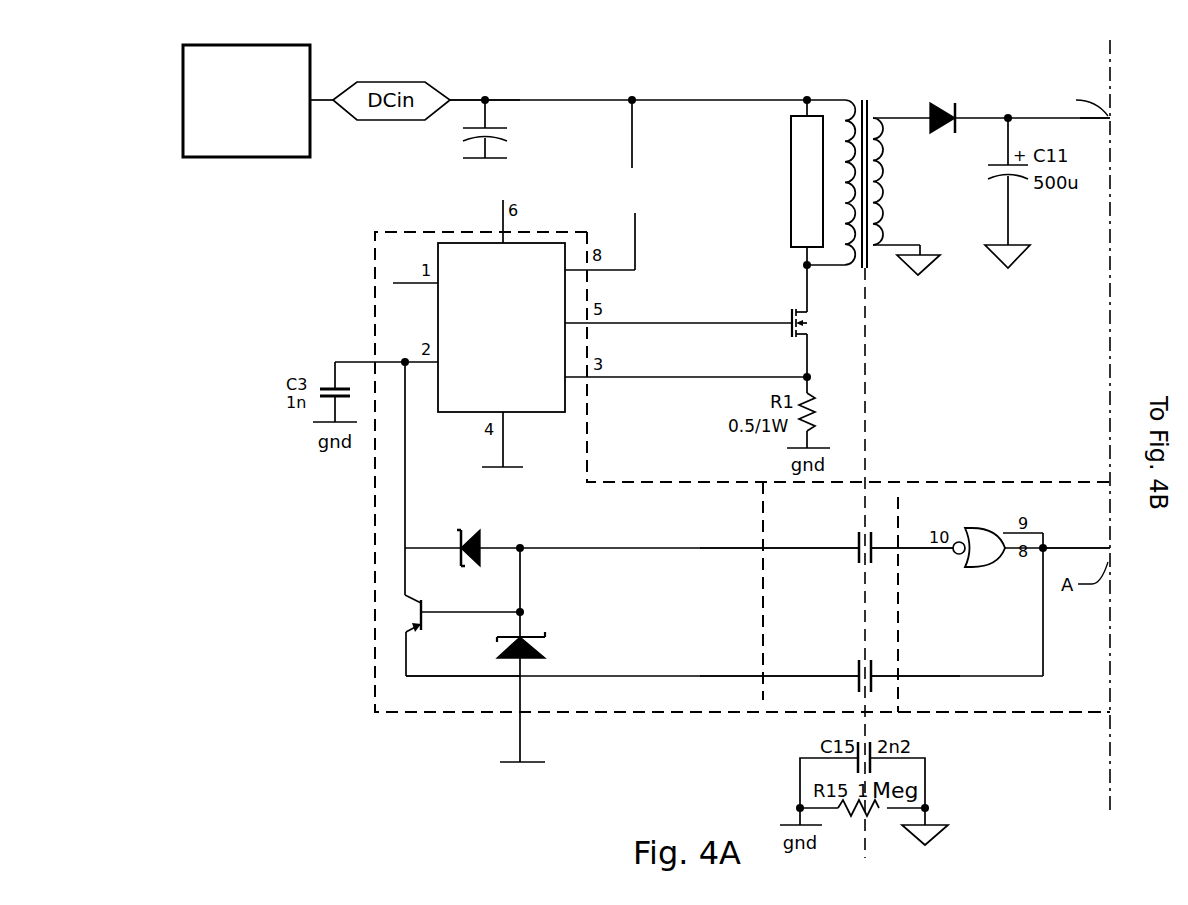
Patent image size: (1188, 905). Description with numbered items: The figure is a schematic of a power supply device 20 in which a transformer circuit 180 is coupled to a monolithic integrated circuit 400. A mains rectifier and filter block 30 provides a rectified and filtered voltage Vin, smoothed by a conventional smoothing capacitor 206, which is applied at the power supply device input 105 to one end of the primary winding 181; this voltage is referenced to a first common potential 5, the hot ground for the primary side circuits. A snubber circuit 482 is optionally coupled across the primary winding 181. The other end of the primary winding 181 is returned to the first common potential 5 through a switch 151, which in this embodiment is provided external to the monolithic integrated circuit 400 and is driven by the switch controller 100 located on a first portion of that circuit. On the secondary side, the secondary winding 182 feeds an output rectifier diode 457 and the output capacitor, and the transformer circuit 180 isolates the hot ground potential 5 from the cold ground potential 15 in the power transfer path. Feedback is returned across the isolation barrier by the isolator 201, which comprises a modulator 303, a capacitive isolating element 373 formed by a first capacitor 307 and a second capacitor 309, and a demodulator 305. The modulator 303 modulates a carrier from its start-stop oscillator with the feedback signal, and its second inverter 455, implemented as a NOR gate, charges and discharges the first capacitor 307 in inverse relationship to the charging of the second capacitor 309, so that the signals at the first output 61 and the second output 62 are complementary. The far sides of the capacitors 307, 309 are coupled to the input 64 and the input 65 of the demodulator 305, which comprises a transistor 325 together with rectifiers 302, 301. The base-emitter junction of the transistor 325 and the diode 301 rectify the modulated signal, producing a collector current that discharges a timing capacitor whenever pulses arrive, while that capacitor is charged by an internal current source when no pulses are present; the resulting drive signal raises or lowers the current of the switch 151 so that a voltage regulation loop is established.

The mains rectifier and filter 30 is at (313, 68).
The power supply device input 105 is at (471, 98).
The smoothing capacitor 206 is at (465, 131).
The first common potential 5 is at (464, 164).
The snubber circuit 482 is at (791, 133).
The transformer circuit 180 is at (863, 154).
The primary winding 181 is at (850, 118).
The secondary winding 182 is at (889, 164).
The output diode D11 457 is at (960, 104).
The power supply device 20 is at (1092, 62).
The cold ground potential 15 is at (1022, 258).
The switch controller 100 is at (406, 313).
The switch 151 is at (796, 310).
The monolithic integrated circuit 400 is at (270, 486).
The capacitive isolating element 373 is at (873, 481).
The isolator 201 is at (1022, 430).
The rectifier 302 is at (463, 532).
The transistor 325 is at (411, 605).
The rectifier 301 is at (500, 641).
The demodulator 305 is at (592, 733).
The first capacitor 307 is at (857, 543).
The second capacitor 309 is at (857, 672).
The input of demodulator 64 is at (763, 552).
The input of demodulator 65 is at (763, 670).
The first output 61 is at (898, 553).
The second output 62 is at (898, 679).
The second inverter 455 is at (994, 530).
The modulator 303 is at (990, 722).